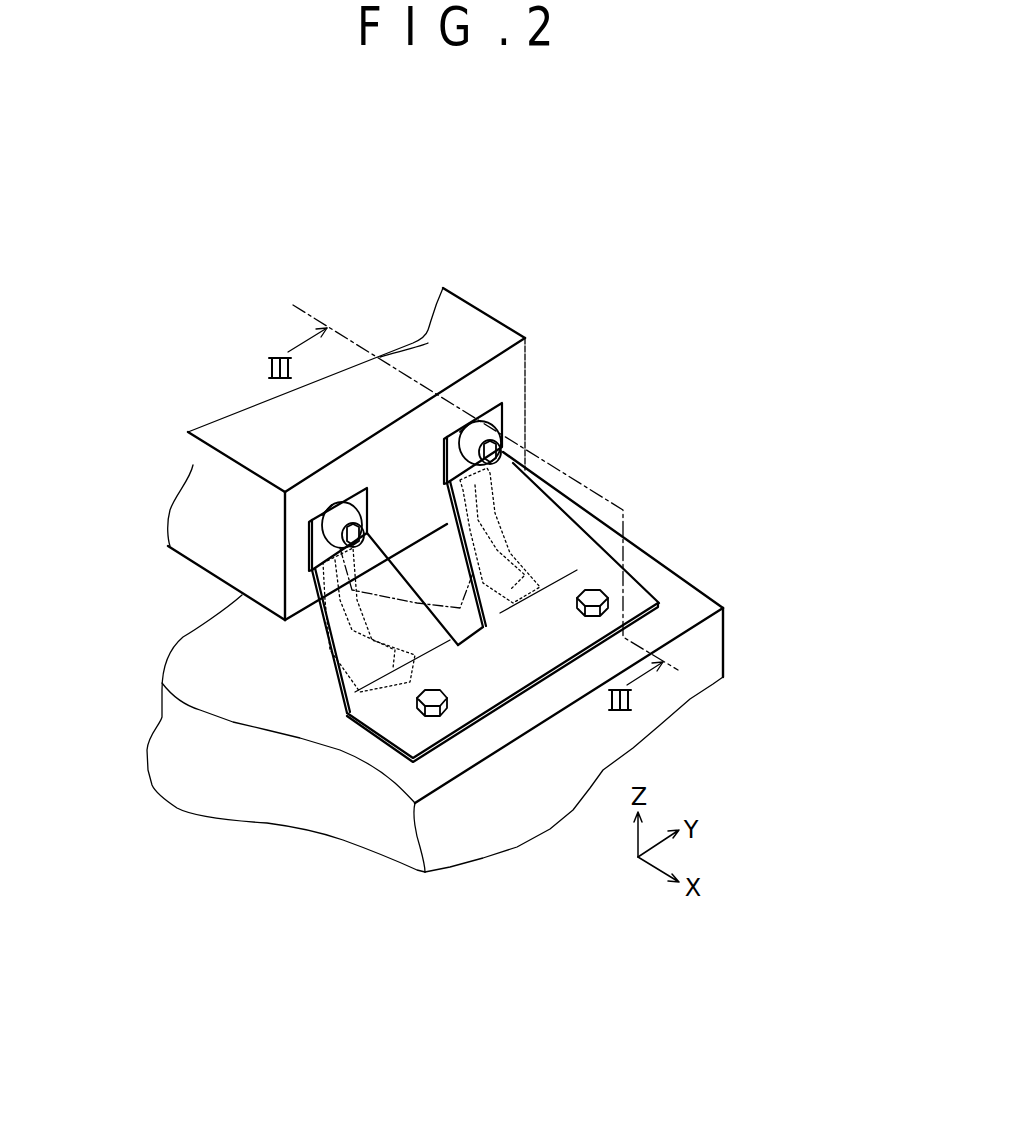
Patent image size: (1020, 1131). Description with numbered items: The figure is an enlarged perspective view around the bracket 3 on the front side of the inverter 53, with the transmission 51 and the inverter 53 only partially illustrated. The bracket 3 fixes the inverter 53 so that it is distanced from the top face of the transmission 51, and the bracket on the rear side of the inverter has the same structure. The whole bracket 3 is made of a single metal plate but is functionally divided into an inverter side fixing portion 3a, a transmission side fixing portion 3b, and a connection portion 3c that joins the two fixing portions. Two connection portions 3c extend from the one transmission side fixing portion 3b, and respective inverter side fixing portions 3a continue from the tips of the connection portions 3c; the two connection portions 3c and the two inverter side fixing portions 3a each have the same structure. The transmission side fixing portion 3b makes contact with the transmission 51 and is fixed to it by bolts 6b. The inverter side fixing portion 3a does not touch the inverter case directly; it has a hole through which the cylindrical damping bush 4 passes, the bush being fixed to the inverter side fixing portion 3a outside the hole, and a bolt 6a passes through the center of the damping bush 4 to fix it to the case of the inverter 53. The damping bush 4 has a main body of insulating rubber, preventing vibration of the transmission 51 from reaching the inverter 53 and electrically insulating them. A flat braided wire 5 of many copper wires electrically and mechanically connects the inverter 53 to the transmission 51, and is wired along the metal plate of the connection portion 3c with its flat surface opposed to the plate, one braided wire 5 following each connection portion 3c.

The bracket 3 is at (408, 673).
The inverter side fixing portion 3a is at (313, 550).
The transmission side fixing portion 3b is at (593, 580).
The connection portion 3c is at (523, 500).
The damping bush 4 is at (327, 500).
The braided wire 5 is at (412, 653).
The bolt 6a is at (328, 503).
The bolt 6b is at (593, 618).
The transmission 51 is at (680, 592).
The inverter 53 is at (428, 343).